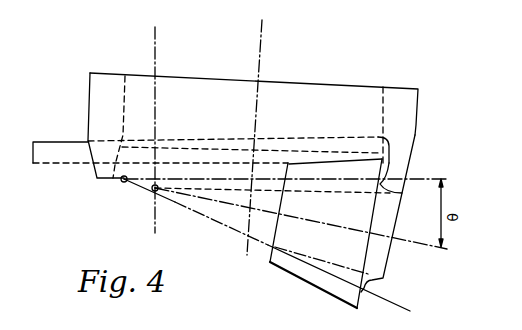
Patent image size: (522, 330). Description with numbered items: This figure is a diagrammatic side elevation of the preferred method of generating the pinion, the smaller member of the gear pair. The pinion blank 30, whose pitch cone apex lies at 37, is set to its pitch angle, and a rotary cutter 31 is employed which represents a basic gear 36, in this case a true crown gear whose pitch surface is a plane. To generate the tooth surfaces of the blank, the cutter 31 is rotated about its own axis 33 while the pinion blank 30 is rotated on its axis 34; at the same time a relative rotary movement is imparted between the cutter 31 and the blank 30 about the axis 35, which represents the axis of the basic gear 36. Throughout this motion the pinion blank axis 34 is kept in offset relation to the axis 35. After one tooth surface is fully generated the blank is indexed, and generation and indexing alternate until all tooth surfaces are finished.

The pinion blank 30 is at (333, 290).
The rotary cutter 31 is at (414, 127).
The axis of the cutter 33 is at (259, 55).
The axis of the pinion blank 34 is at (397, 243).
The axis of the basic gear 35 is at (155, 105).
The basic gear 36 is at (48, 142).
The pitch cone apex 37 is at (122, 182).